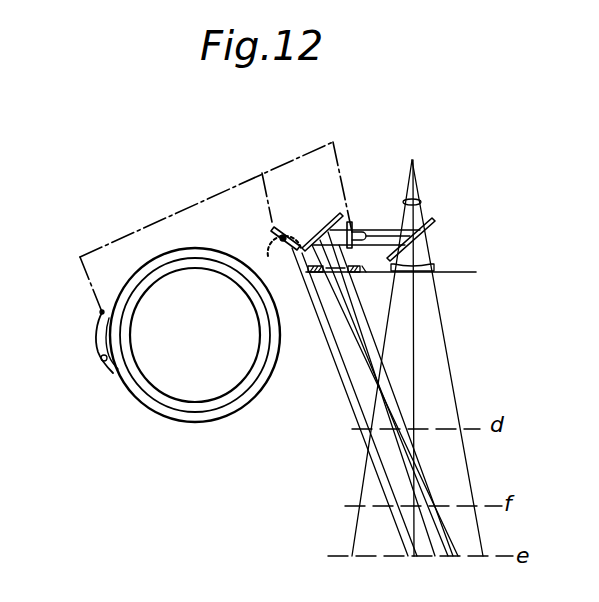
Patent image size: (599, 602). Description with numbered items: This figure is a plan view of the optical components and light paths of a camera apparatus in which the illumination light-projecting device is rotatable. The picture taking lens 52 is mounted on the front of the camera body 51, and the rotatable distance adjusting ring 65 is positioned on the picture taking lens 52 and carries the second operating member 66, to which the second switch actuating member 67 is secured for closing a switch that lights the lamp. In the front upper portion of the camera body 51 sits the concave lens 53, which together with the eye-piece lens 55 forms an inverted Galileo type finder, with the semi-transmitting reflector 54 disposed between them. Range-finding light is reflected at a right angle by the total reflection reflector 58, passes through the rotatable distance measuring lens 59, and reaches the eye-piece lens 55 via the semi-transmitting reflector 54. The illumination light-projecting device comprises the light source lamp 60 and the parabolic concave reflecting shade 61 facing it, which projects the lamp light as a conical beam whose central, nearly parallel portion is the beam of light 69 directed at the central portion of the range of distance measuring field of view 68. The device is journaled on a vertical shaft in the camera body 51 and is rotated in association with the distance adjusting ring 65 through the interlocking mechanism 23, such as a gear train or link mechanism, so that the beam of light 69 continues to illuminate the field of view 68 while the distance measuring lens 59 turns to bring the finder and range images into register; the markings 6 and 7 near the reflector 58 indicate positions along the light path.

The housing outline 23 is at (192, 205).
The distance adjusting ring 65 is at (222, 412).
The picture taking lens 52 is at (181, 405).
The second switch actuating member 67 is at (101, 315).
The second operating member 66 is at (101, 343).
The parabolic concave reflecting shade 61 is at (269, 236).
The light source lamp 60 is at (295, 238).
The total reflection reflector 58 is at (338, 214).
The distance measuring lens 59 is at (351, 222).
The eye-piece lens 55 is at (420, 202).
The semi-transmitting reflector 54 is at (435, 219).
The camera body 51 is at (453, 265).
The concave lens 53 is at (425, 273).
The aperture 6 is at (347, 259).
The aperture edge 7 is at (354, 263).
The beam of light 69 is at (308, 301).
The range of distance measuring field of view 68 is at (340, 301).